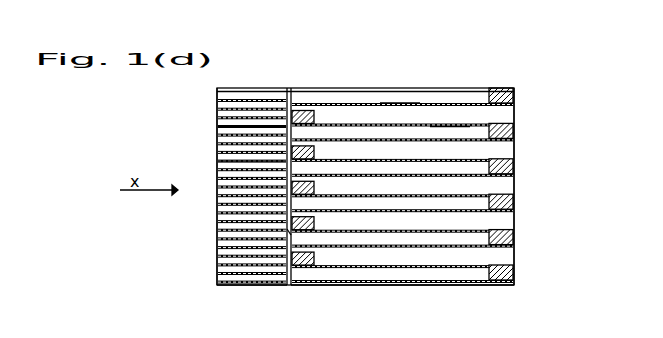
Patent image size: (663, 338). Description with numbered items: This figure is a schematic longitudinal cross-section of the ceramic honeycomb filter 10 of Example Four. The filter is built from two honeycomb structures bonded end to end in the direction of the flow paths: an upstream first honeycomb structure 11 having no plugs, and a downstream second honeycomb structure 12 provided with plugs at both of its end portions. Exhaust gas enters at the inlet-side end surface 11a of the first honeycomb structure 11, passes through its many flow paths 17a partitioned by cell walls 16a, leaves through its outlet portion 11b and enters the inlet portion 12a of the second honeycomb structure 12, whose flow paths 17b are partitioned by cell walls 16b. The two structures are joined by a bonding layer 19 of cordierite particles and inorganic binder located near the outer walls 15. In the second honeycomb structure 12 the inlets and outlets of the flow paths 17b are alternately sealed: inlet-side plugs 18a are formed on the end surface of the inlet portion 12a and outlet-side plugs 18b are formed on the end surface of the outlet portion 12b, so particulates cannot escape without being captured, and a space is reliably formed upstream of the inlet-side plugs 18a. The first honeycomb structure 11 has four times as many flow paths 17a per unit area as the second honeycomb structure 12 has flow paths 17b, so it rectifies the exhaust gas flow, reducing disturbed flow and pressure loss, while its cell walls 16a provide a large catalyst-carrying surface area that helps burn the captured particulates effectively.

The ceramic honeycomb filter 10 is at (519, 73).
The first honeycomb structure 11 is at (231, 100).
The inlet-side end surface 11a is at (225, 263).
The outlet portion 11b is at (283, 287).
The second honeycomb structure 12 is at (355, 97).
The inlet portion 12a is at (298, 273).
The outlet portion 12b is at (513, 255).
The outer wall 15 is at (497, 88).
The cell walls 16a is at (228, 126).
The cell walls 16b is at (400, 103).
The flow paths 17a is at (226, 160).
The flow paths 17b is at (447, 130).
The inlet-side plugs 18a is at (288, 232).
The outlet-side plugs 18b is at (510, 236).
The bonding layer 19 is at (287, 88).